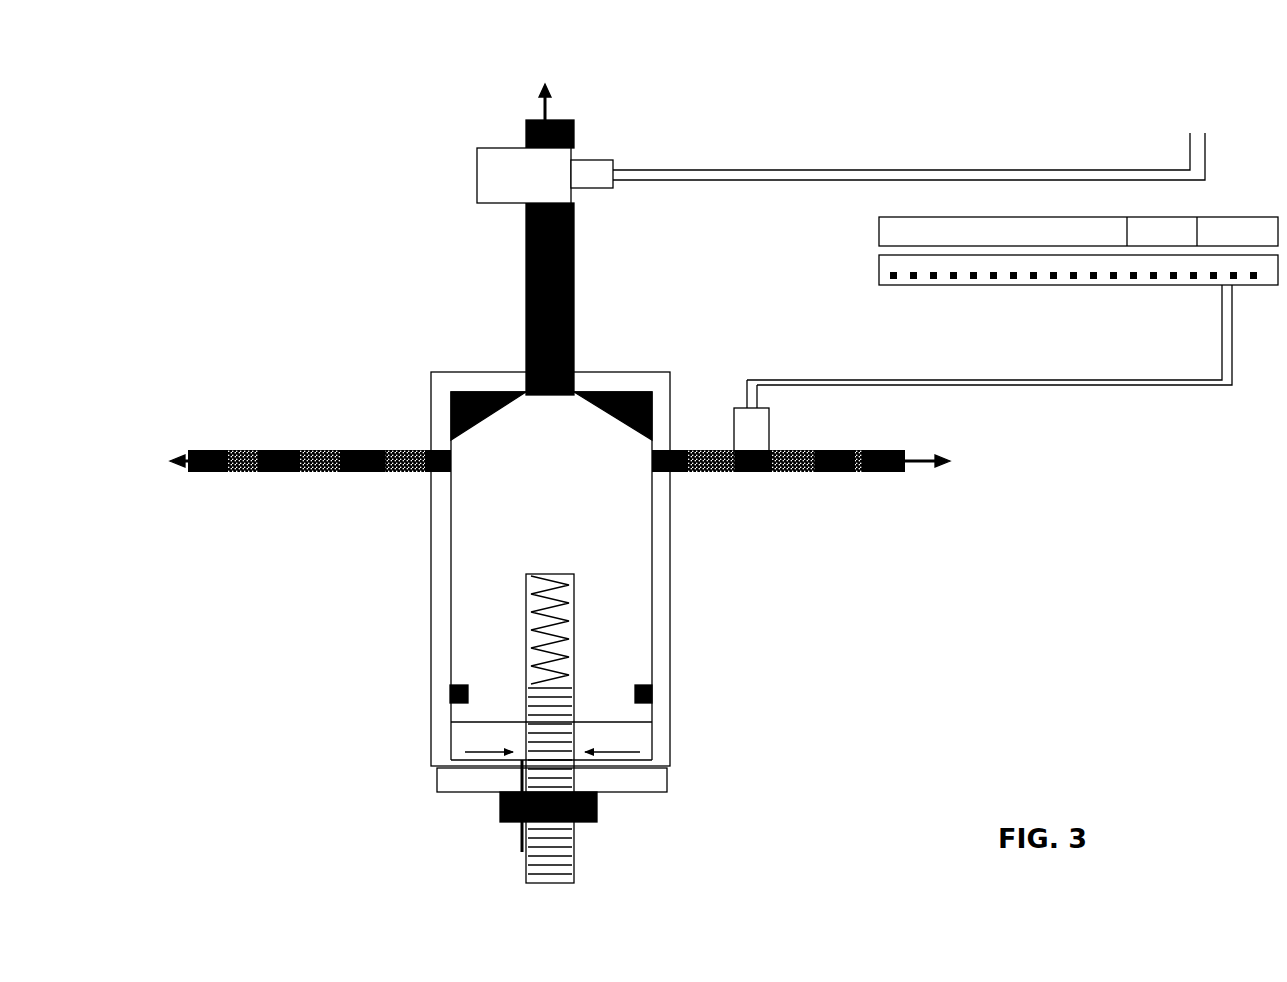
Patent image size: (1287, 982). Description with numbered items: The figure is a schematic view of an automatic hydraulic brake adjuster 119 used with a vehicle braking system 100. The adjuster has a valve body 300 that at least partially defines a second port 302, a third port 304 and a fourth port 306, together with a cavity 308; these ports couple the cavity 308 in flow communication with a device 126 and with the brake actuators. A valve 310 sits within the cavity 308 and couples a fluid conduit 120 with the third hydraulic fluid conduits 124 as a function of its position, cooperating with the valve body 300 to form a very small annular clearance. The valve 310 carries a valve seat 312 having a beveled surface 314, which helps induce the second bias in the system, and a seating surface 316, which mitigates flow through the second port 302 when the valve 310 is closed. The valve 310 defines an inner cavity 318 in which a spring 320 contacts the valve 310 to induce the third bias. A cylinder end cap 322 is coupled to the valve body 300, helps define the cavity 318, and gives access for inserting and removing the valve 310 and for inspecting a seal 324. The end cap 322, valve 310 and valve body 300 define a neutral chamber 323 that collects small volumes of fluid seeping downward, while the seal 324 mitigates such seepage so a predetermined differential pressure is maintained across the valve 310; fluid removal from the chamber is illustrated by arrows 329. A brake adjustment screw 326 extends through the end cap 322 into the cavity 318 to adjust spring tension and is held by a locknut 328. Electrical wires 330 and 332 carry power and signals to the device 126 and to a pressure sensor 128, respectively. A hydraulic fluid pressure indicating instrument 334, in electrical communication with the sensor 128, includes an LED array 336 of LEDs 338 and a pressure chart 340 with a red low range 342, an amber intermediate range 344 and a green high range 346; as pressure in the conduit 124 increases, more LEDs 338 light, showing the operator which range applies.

The vehicle braking system 100 is at (328, 122).
The automatic hydraulic brake adjuster 119 is at (347, 193).
The fluid conduit 120 is at (527, 297).
The third hydraulic fluid conduits 124 is at (287, 442).
The device 126 is at (578, 148).
The pressure sensor 128 is at (737, 405).
The valve body 300 is at (663, 565).
The second port 302 is at (578, 385).
The third port 304 is at (672, 472).
The fourth port 306 is at (431, 468).
The cavity 308 is at (430, 372).
The valve 310 is at (566, 505).
The valve seat 312 is at (590, 378).
The beveled surface 314 is at (650, 395).
The seating surface 316 is at (537, 398).
The cavity 318 is at (527, 612).
The spring 320 is at (527, 632).
The cylinder end cap 322 is at (678, 777).
The neutral chamber 323 is at (462, 744).
The seal 324 is at (450, 693).
The brake adjustment screw 326 is at (588, 855).
The locknut 328 is at (602, 806).
The arrows 329 is at (523, 852).
The electrical wires 330 is at (870, 172).
The electrical wires 332 is at (997, 382).
The hydraulic fluid pressure indicating instrument 334 is at (838, 246).
The light emitting diode array 336 is at (897, 286).
The LEDs 338 is at (1110, 278).
The pressure chart 340 is at (1088, 217).
The red pressure range 342 is at (977, 242).
The intermediate pressure range 344 is at (1167, 242).
The high pressure range 346 is at (1249, 242).